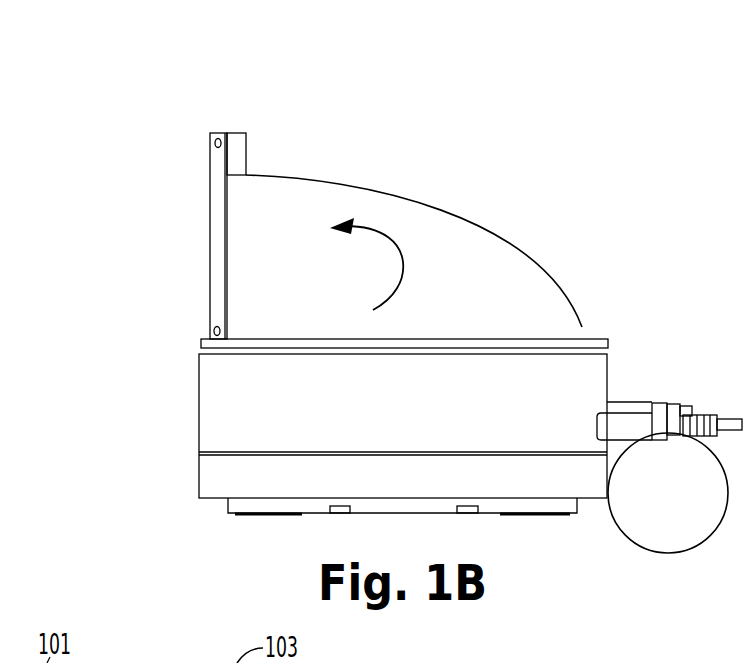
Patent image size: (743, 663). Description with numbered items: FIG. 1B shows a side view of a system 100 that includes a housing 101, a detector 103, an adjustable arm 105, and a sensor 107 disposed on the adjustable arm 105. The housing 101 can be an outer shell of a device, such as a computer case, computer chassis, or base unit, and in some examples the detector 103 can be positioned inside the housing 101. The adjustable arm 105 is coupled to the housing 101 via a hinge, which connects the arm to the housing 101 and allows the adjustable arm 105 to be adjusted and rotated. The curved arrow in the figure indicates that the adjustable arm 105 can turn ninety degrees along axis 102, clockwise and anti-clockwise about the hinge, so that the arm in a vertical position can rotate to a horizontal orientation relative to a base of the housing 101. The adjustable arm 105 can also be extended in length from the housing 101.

The system 100 is at (155, 100).
The housing 101 is at (412, 338).
The axis 102 is at (400, 249).
The detector 103 is at (690, 532).
The adjustable arm 105 is at (211, 244).
The sensor 107 is at (213, 143).